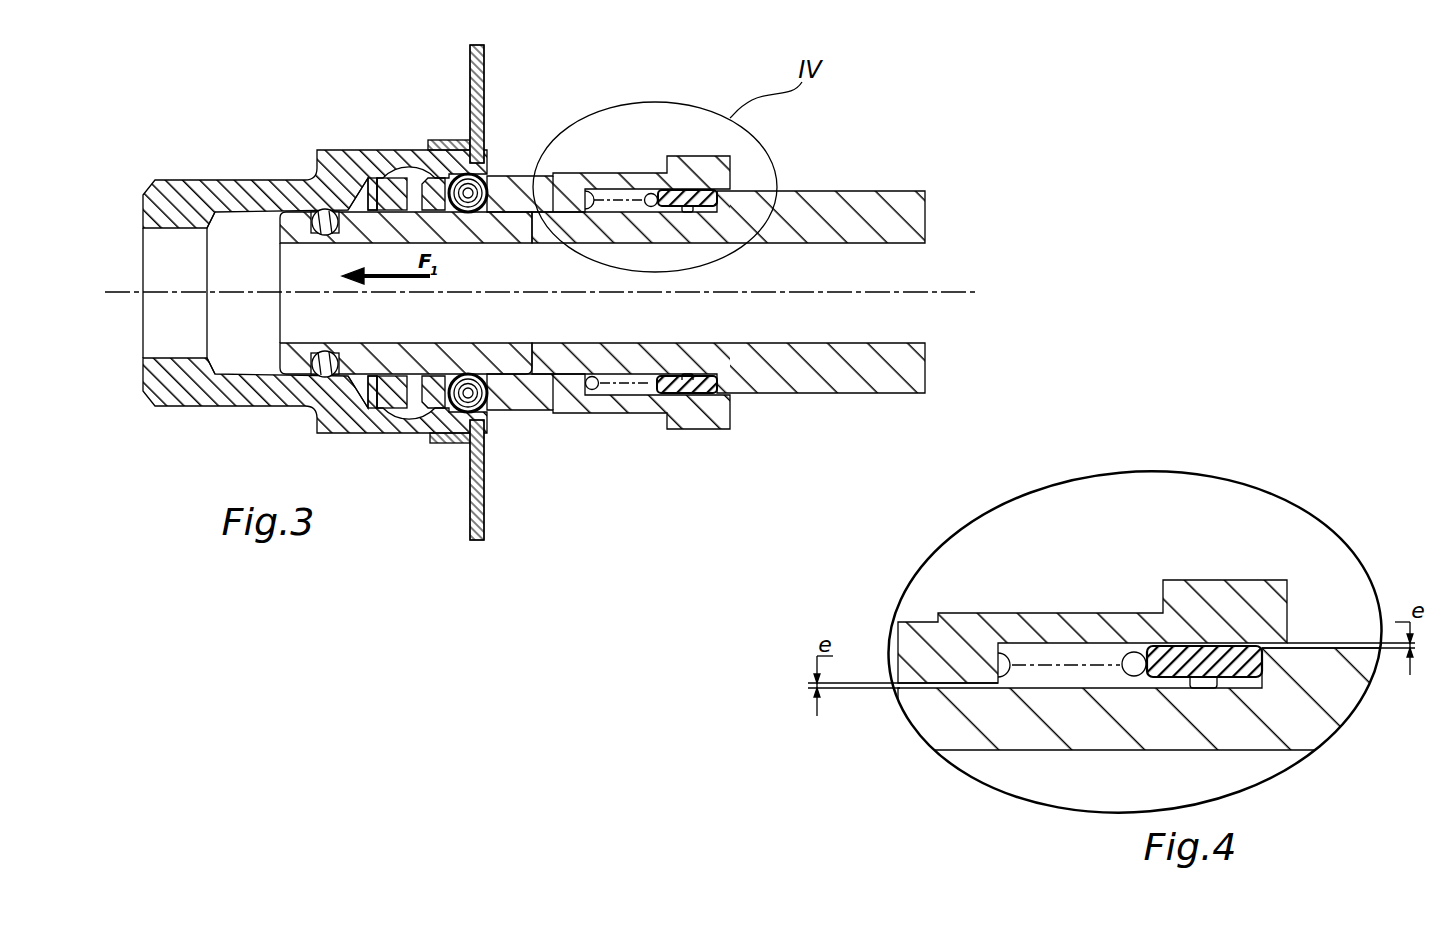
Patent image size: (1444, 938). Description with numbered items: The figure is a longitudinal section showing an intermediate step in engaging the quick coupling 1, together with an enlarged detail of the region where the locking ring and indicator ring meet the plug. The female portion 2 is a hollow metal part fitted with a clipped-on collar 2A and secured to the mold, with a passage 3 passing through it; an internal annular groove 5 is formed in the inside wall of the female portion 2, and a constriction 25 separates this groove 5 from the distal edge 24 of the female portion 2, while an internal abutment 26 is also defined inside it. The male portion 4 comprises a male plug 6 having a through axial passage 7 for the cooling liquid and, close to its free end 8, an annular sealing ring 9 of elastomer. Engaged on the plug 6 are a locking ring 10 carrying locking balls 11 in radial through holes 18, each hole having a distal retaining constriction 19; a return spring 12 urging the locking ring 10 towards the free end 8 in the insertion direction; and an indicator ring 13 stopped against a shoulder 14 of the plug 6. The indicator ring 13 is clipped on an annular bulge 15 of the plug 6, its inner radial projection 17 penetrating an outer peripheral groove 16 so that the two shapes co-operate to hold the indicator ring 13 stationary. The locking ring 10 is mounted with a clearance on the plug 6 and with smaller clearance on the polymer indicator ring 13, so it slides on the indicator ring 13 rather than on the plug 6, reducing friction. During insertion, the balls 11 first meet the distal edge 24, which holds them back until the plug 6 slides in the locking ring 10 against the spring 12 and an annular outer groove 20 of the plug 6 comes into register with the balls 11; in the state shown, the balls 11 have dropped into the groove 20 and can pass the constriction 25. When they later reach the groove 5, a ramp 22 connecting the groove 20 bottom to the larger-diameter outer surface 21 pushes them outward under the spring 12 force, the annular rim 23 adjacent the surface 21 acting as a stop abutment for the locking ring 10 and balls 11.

In FIG. 3, the quick coupling 1 is at (152, 546).
In FIG. 3, the female portion 2 is at (167, 405).
In FIG. 3, the clipped-on collar 2A is at (470, 92).
In FIG. 3, the passage 3 is at (154, 338).
In FIG. 3, the male portion 4 is at (523, 434).
In FIG. 3, the internal annular groove 5 is at (323, 410).
In FIG. 3, the male plug 6 is at (268, 262).
In FIG. 4, the male plug 6 is at (957, 723).
In FIG. 3, the through axial passage 7 is at (914, 250).
In FIG. 4, the through axial passage 7 is at (1255, 746).
In FIG. 3, the free end 8 is at (146, 250).
In FIG. 3, the annular sealing ring 9 is at (298, 180).
In FIG. 3, the locking ring 10 is at (533, 176).
In FIG. 4, the locking ring 10 is at (1085, 620).
In FIG. 3, the locking balls 11 is at (517, 186).
In FIG. 3, the return spring 12 is at (612, 398).
In FIG. 4, the return spring 12 is at (1127, 676).
In FIG. 3, the indicator ring 13 is at (700, 396).
In FIG. 4, the indicator ring 13 is at (1247, 656).
In FIG. 3, the shoulder 14 is at (692, 357).
In FIG. 4, the shoulder 14 is at (1240, 681).
In FIG. 3, the annular bulge 15 is at (648, 399).
In FIG. 4, the annular bulge 15 is at (1175, 681).
In FIG. 3, the outer peripheral groove 16 is at (687, 396).
In FIG. 4, the outer peripheral groove 16 is at (1212, 646).
In FIG. 3, the inner radial projection 17 is at (687, 293).
In FIG. 4, the inner radial projection 17 is at (1207, 690).
In FIG. 3, the radial through holes 18 is at (480, 377).
In FIG. 3, the distal retaining constriction 19 is at (416, 148).
In FIG. 3, the annular outer groove 20 is at (533, 410).
In FIG. 3, the outer surface 21 is at (380, 428).
In FIG. 3, the ramp 22 is at (492, 217).
In FIG. 3, the annular rim 23 is at (373, 178).
In FIG. 3, the distal edge 24 is at (486, 174).
In FIG. 3, the constriction 25 is at (441, 446).
In FIG. 3, the internal abutment 26 is at (347, 172).